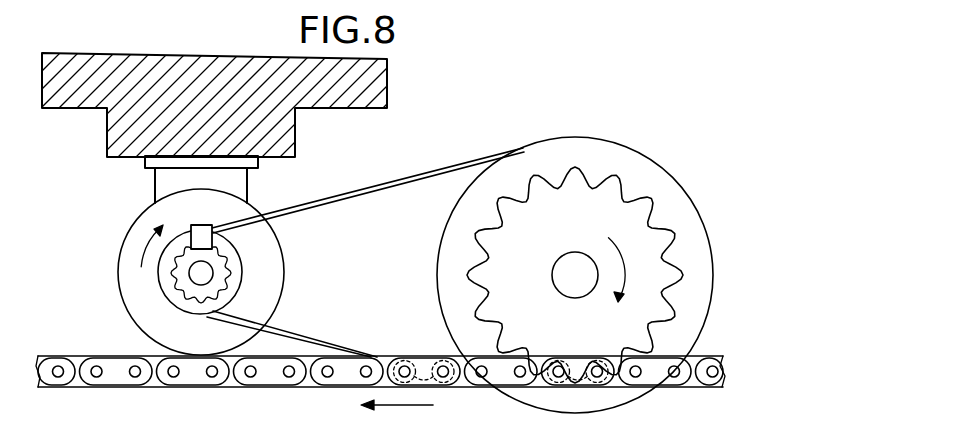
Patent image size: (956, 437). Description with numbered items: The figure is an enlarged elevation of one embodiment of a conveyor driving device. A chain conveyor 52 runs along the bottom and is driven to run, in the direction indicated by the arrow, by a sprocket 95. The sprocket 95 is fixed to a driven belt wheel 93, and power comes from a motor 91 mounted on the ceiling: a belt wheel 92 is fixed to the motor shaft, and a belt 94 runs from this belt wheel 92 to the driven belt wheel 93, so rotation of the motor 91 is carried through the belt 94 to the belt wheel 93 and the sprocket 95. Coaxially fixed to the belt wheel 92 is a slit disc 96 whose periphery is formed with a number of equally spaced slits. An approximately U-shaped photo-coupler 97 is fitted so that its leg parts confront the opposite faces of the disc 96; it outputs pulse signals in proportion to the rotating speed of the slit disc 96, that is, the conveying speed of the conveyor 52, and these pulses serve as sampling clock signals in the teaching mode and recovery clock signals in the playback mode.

The chain conveyor 52 is at (427, 357).
The motor 91 is at (277, 275).
The belt wheel 92 is at (173, 302).
The driven belt wheel 93 is at (566, 152).
The belt 94 is at (350, 197).
The sprocket 95 is at (617, 185).
The slit disc 96 is at (168, 274).
The photo-coupler 97 is at (192, 226).